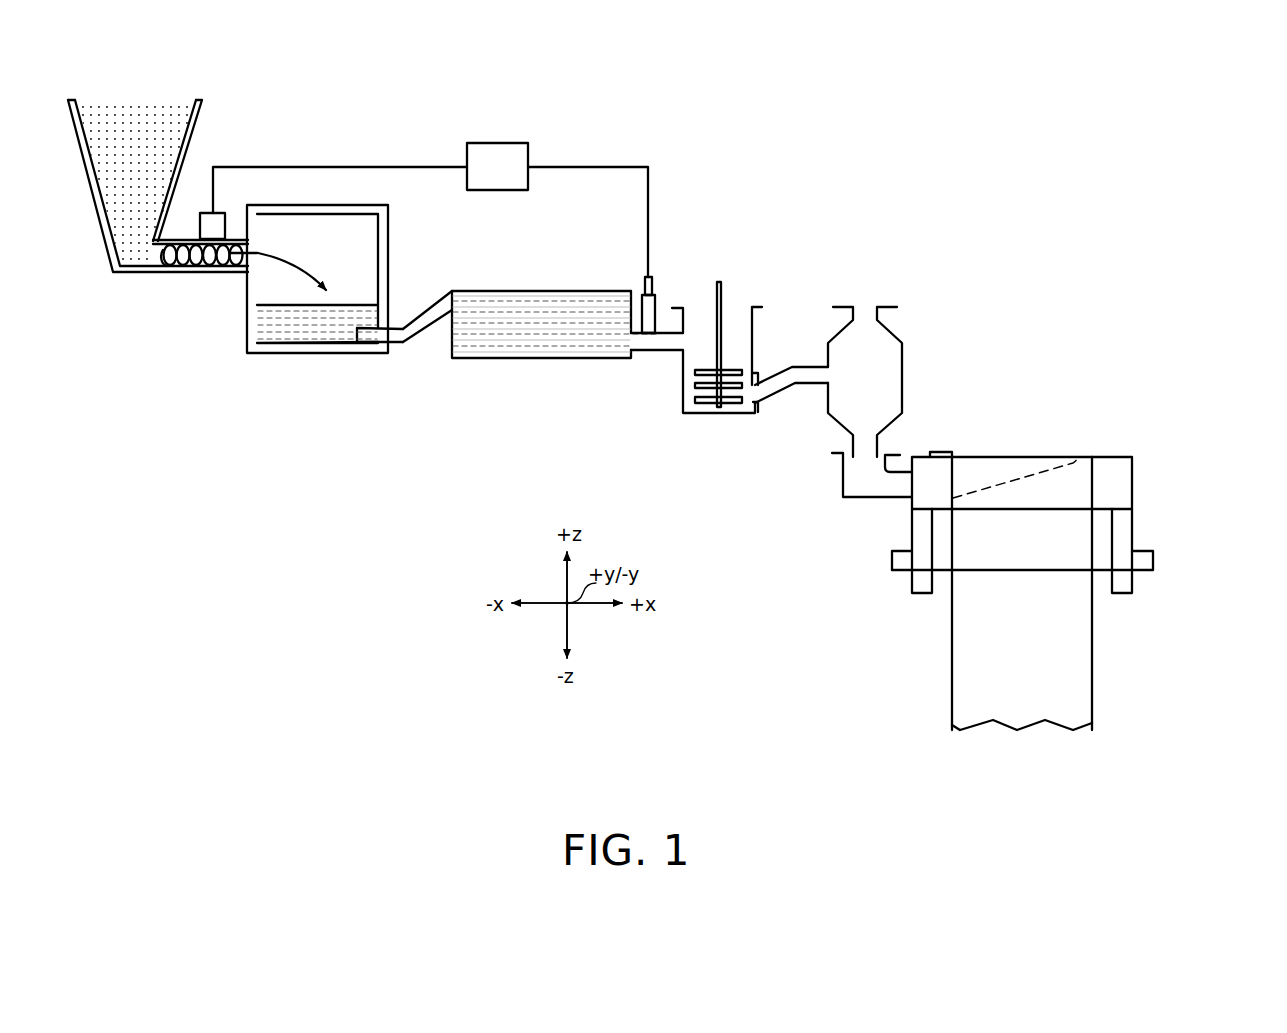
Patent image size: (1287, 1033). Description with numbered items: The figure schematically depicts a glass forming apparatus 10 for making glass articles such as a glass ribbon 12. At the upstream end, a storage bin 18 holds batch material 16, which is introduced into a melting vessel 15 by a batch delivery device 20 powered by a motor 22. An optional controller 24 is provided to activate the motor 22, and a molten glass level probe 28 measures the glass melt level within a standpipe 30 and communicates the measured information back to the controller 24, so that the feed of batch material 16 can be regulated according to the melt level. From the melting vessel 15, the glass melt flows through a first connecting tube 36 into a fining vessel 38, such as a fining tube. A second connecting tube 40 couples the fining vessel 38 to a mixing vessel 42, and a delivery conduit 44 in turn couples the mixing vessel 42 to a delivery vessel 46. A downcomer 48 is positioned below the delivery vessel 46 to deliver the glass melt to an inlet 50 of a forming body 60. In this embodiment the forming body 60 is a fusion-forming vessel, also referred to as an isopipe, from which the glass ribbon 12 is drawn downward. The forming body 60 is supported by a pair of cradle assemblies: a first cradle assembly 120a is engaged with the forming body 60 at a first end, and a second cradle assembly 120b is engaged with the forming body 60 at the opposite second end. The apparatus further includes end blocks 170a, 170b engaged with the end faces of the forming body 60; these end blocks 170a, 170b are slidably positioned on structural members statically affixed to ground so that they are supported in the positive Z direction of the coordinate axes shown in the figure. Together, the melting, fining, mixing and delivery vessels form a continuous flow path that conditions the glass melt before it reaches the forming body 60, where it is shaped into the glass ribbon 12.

The glass forming apparatus 10 is at (913, 173).
The glass ribbon 12 is at (952, 665).
The melting vessel 15 is at (275, 355).
The batch material 16 is at (128, 108).
The storage bin 18 is at (88, 185).
The batch delivery device 20 is at (195, 258).
The motor 22 is at (221, 213).
The controller 24 is at (490, 142).
The molten glass level probe 28 is at (643, 280).
The standpipe 30 is at (657, 302).
The first connecting tube 36 is at (423, 308).
The fining vessel 38 is at (535, 288).
The second connecting tube 40 is at (662, 355).
The mixing vessel 42 is at (757, 332).
The delivery conduit 44 is at (767, 403).
The delivery vessel 46 is at (905, 351).
The downcomer 48 is at (853, 447).
The inlet 50 is at (843, 477).
The forming body 60 is at (1125, 447).
The first cradle assembly 120a is at (903, 546).
The second cradle assembly 120b is at (1147, 543).
The end block 170a is at (887, 573).
The end block 170b is at (1157, 574).